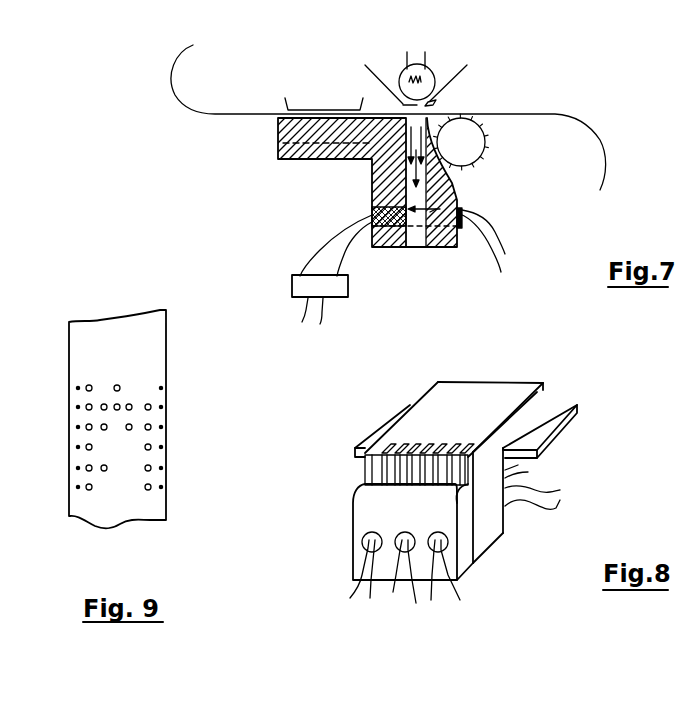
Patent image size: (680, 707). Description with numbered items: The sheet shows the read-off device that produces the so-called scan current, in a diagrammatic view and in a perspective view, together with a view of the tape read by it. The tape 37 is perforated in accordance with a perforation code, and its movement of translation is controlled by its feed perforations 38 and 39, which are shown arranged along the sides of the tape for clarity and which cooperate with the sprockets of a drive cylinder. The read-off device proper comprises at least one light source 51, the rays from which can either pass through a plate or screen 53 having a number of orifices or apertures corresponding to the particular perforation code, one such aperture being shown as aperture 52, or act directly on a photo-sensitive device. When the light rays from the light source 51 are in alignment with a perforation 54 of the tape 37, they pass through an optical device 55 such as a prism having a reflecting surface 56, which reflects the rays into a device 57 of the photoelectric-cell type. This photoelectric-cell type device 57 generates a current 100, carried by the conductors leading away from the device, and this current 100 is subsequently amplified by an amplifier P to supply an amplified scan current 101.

In FIG. 7, the tape 37 is at (589, 127).
In FIG. 9, the tape 37 is at (148, 357).
In FIG. 9, the feed perforation 38 is at (76, 427).
In FIG. 9, the feed perforation 39 is at (163, 447).
In FIG. 7, the light source 51 is at (430, 67).
In FIG. 7, the aperture 52 is at (435, 99).
In FIG. 7, the plate or screen 53 is at (467, 65).
In FIG. 7, the perforation 54 is at (418, 110).
In FIG. 7, the optical device 55 is at (448, 180).
In FIG. 8, the optical device 55 is at (395, 468).
In FIG. 7, the reflecting surface 56 is at (456, 198).
In FIG. 7, the photoelectric-cell type device 57 is at (371, 208).
In FIG. 7, the current 100 is at (352, 254).
In FIG. 8, the current 100 is at (458, 592).
In FIG. 7, the amplified scan current 101 is at (323, 316).
In FIG. 7, the amplifier P is at (349, 287).